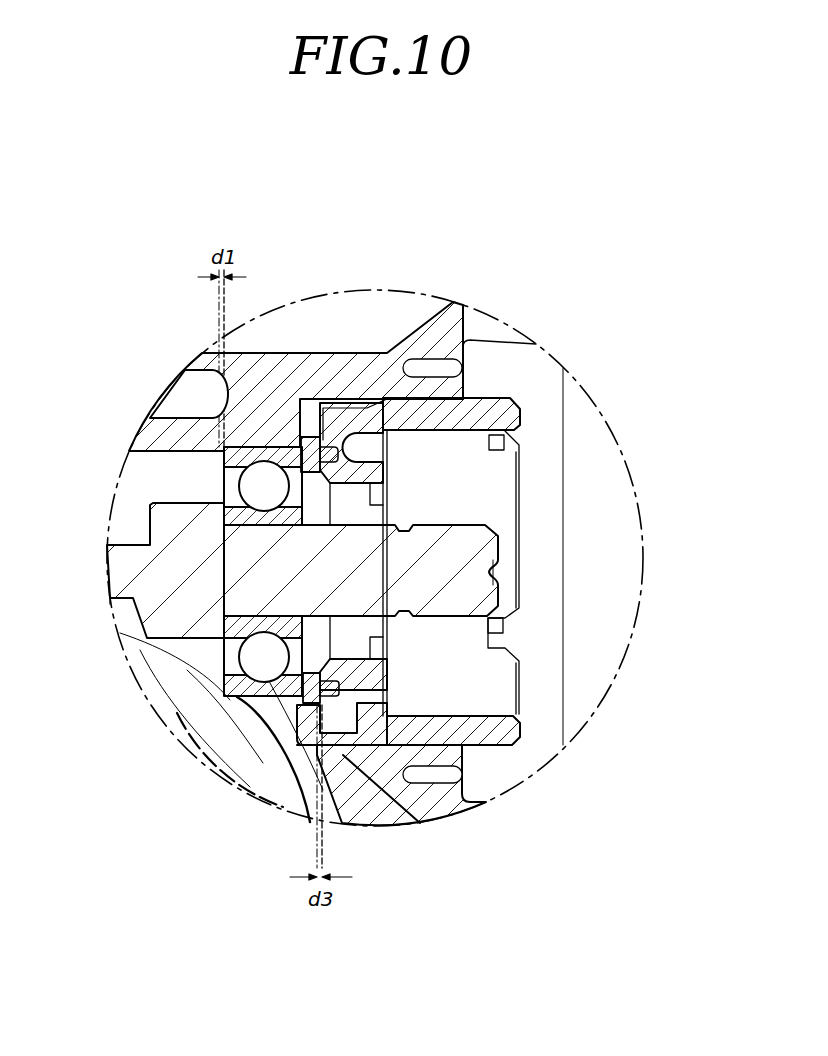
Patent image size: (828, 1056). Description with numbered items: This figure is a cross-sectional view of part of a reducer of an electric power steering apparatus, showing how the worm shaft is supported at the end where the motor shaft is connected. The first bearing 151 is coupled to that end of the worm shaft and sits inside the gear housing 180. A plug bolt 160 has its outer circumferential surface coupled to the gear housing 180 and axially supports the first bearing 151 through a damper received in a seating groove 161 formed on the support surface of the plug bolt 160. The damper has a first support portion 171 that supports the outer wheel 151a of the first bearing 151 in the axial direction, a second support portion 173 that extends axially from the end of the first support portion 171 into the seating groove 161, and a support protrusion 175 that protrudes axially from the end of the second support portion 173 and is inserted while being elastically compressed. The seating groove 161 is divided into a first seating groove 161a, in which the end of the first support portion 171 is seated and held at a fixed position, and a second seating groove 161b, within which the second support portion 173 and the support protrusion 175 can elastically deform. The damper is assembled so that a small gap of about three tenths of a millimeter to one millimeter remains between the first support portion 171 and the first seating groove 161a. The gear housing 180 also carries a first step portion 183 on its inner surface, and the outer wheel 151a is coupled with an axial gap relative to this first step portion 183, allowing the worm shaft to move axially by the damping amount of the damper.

The first bearing 151 is at (179, 532).
The outer wheel 151a is at (238, 447).
The plug bolt 160 is at (537, 440).
The seating groove 161 is at (357, 457).
The first seating groove 161a is at (300, 433).
The second seating groove 161b is at (332, 448).
The first support portion 171 is at (240, 697).
The second support portion 173 is at (257, 775).
The support protrusion 175 is at (370, 702).
The gear housing 180 is at (293, 366).
The first step portion 183 is at (232, 445).